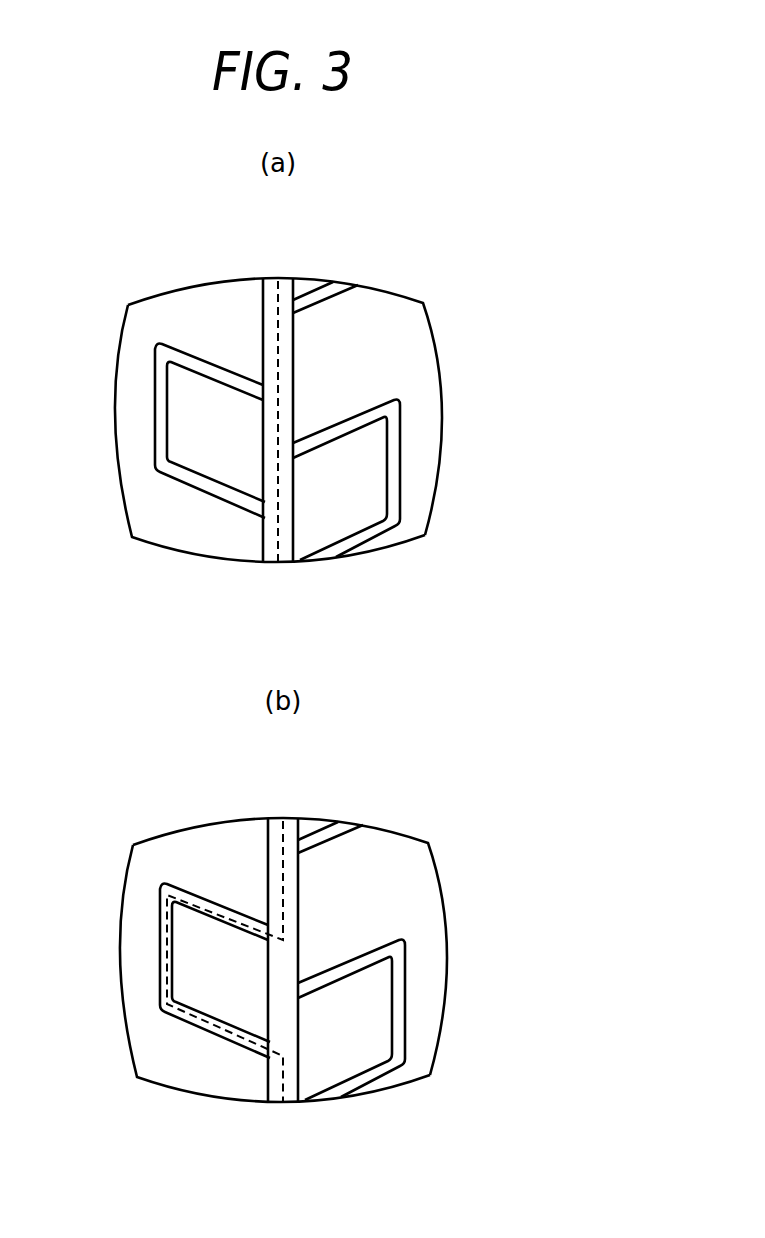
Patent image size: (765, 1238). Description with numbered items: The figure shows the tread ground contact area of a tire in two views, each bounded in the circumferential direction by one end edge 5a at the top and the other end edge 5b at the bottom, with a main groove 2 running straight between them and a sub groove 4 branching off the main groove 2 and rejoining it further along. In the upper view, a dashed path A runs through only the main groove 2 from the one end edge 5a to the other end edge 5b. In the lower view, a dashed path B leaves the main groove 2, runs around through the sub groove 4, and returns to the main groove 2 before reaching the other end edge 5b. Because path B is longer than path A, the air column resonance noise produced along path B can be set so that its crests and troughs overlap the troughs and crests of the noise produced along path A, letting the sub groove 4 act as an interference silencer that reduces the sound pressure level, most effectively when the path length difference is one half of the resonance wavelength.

The main groove 2 is at (272, 288).
The sub groove 4 is at (163, 350).
The one end edge 5a is at (393, 290).
The other end edge 5b is at (402, 542).
The path A is at (287, 283).
The path B is at (292, 823).